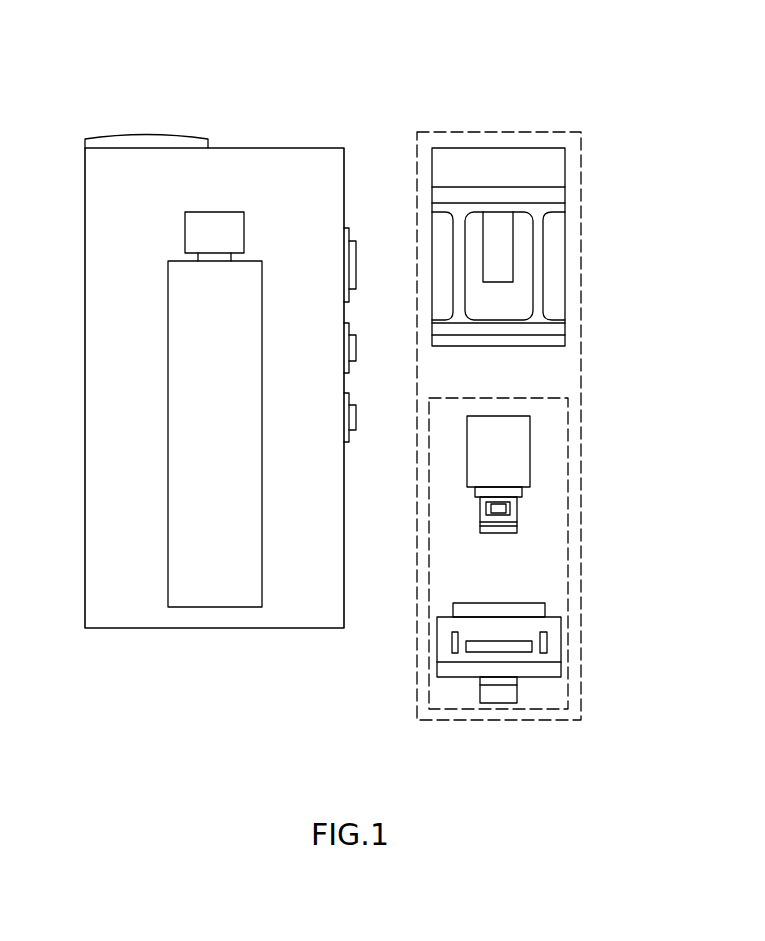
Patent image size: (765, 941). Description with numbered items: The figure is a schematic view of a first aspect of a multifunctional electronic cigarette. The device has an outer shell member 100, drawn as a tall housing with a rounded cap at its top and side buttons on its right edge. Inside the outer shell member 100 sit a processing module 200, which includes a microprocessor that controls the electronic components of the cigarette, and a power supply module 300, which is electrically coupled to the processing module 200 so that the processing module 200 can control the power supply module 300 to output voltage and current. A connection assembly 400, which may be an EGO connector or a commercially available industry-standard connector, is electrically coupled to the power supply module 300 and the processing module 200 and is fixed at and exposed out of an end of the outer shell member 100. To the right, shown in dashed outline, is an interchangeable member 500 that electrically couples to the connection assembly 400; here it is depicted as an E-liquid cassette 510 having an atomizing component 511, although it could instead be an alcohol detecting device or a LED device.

The outer shell member 100 is at (297, 148).
The processing module 200 is at (214, 236).
The power supply module 300 is at (210, 592).
The connection assembly 400 is at (145, 142).
The interchangeable member 500 is at (487, 130).
The E-liquid cassette 510 is at (568, 562).
The atomizing component 511 is at (530, 476).